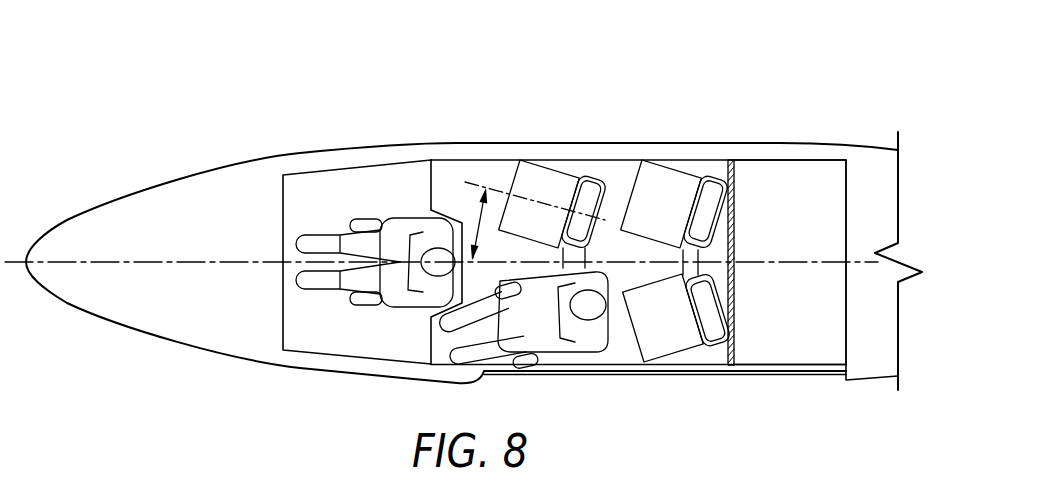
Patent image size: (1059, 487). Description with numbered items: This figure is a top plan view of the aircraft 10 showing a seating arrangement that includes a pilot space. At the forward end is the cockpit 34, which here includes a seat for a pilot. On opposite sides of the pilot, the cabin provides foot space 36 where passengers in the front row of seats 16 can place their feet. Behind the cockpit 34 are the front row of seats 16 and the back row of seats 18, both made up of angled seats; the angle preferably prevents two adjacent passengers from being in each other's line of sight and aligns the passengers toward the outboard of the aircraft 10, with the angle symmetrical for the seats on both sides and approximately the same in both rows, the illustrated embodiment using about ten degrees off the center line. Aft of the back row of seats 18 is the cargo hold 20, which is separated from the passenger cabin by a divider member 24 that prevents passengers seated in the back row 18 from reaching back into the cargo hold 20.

The aircraft 10 is at (851, 97).
The front row of seats 16 is at (553, 128).
The back row of seats 18 is at (673, 128).
The cargo hold 20 is at (803, 328).
The divider member 24 is at (734, 176).
The cockpit 34 is at (342, 182).
The foot space 36 is at (428, 187).